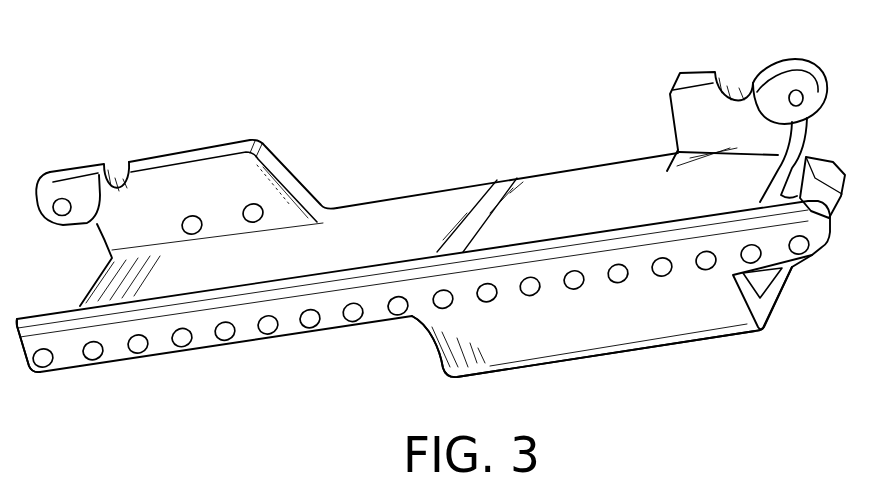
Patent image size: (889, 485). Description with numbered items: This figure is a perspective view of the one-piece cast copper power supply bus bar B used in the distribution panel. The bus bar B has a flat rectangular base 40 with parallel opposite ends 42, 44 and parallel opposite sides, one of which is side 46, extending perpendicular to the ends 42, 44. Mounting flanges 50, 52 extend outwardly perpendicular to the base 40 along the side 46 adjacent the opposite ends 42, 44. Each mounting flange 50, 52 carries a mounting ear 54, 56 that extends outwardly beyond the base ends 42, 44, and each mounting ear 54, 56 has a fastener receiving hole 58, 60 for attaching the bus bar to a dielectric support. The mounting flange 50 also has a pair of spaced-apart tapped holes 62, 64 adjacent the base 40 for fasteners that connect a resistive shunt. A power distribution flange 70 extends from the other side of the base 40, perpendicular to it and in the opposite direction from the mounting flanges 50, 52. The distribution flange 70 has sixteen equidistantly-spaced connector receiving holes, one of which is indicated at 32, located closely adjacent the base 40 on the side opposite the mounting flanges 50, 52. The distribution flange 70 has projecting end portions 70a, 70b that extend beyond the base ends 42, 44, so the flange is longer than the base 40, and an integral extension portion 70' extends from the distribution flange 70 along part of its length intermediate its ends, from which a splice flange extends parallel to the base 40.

The connector receiving hole 32 is at (573, 288).
The base 40 is at (454, 197).
The end 42 is at (97, 270).
The end 44 is at (800, 160).
The side 46 is at (538, 173).
The mounting flange 50 is at (181, 152).
The mounting flange 52 is at (695, 72).
The mounting ear 54 is at (50, 173).
The mounting ear 56 is at (812, 70).
The fastener receiving hole 58 is at (67, 200).
The fastener receiving hole 60 is at (792, 93).
The tapped hole 62 is at (197, 237).
The tapped hole 64 is at (255, 223).
The power distribution flange 70 is at (424, 292).
The projecting end portion 70a is at (33, 360).
The integral extension portion 70' is at (583, 358).
The projecting end portion 70b is at (813, 248).
The bus bar B is at (357, 184).